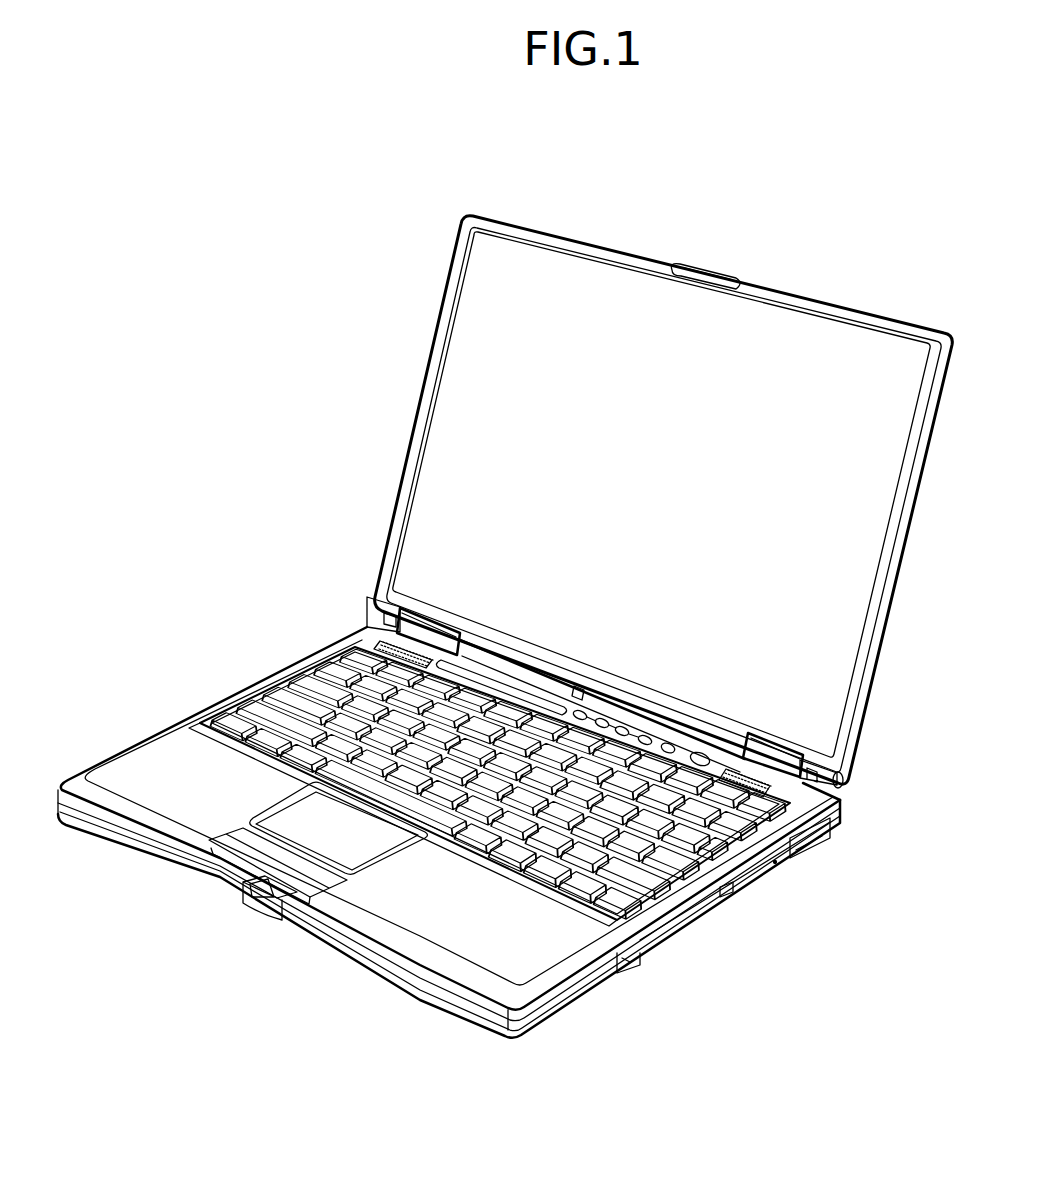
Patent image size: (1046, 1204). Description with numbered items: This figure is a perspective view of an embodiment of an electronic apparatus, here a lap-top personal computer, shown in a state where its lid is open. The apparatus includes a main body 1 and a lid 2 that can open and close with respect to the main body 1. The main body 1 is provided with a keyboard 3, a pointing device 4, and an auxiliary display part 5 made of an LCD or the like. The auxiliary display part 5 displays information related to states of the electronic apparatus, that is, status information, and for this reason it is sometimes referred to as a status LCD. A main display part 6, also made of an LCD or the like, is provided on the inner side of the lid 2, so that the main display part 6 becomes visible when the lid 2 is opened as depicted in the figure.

The main body 1 is at (675, 942).
The lid 2 is at (856, 302).
The keyboard 3 is at (292, 704).
The pointing device 4 is at (372, 848).
The auxiliary display part 5 is at (520, 689).
The main display part 6 is at (443, 403).